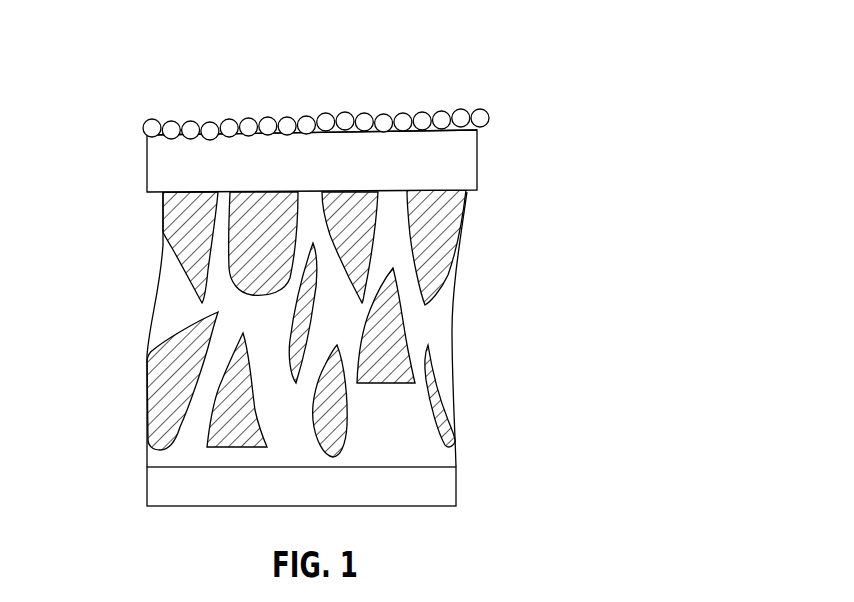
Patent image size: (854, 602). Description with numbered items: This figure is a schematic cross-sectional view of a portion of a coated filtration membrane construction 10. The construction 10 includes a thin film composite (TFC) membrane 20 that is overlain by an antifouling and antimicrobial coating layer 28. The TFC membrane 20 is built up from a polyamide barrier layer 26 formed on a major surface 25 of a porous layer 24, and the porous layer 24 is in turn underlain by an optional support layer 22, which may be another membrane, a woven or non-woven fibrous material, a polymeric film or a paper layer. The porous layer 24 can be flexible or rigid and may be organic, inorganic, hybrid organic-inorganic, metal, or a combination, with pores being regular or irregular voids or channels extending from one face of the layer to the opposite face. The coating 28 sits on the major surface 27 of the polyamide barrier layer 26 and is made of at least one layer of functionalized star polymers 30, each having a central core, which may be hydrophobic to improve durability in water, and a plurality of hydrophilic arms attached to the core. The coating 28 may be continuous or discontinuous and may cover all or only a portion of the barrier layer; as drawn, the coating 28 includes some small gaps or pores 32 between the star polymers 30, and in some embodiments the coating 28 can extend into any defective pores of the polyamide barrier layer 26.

The coated filtration membrane construction 10 is at (60, 143).
The thin film composite membrane 20 is at (125, 135).
The support layer 22 is at (445, 485).
The porous layer 24 is at (482, 190).
The major surface of the porous layer 25 is at (443, 190).
The polyamide barrier layer 26 is at (462, 158).
The major surface of the polyamide barrier layer 27 is at (470, 117).
The antifouling and antimicrobial coating layer 28 is at (290, 87).
The functionalized star polymers 30 is at (192, 127).
The gaps or pores 32 is at (316, 118).